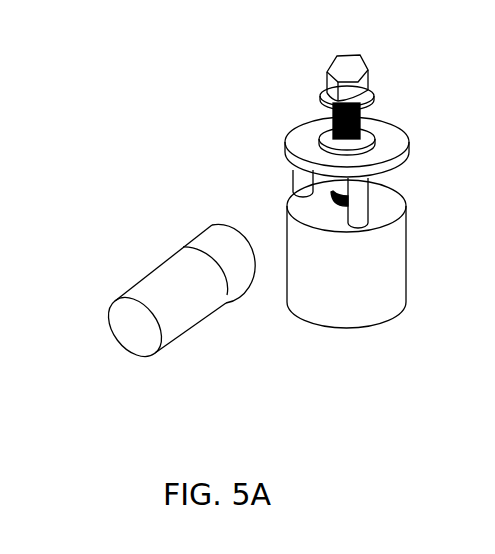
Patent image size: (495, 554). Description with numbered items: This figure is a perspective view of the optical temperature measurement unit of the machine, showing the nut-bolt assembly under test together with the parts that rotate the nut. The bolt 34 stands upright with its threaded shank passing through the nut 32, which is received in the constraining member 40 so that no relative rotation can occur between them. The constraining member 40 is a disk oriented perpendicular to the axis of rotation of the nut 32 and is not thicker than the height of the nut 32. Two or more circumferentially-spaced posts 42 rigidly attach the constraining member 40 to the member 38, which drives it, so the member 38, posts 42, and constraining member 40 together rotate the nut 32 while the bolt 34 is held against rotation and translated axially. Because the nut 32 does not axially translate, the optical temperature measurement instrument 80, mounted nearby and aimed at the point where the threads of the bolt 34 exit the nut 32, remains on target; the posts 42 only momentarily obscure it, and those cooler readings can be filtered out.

The nut 32 is at (384, 96).
The bolt 34 is at (317, 66).
The member 38 is at (323, 338).
The constraining member 40 is at (416, 161).
The posts 42 is at (366, 213).
The optical temperature measurement instrument 80 is at (144, 263).